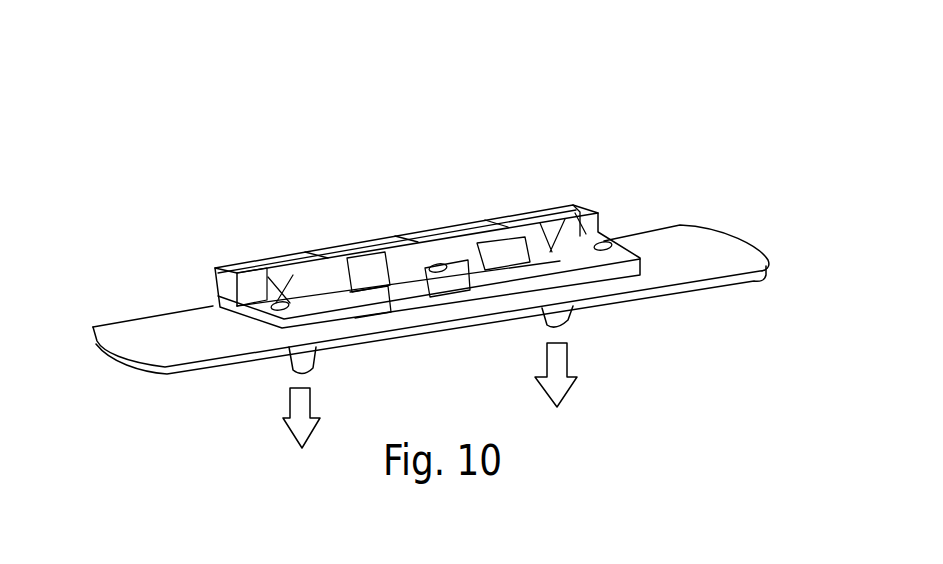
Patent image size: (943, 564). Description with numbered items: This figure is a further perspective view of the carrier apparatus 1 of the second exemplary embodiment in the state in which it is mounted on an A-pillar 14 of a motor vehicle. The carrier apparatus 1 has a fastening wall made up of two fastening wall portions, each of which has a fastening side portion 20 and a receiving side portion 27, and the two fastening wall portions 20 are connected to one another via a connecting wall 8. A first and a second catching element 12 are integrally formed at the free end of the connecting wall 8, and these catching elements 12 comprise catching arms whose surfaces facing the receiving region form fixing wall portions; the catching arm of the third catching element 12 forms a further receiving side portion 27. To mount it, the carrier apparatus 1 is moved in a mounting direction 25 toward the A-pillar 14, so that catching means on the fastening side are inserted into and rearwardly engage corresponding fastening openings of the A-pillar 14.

The carrier apparatus 1 is at (755, 70).
The connecting wall 8 is at (253, 274).
The catching element 12 is at (387, 257).
The A-pillar 14 is at (698, 263).
The fastening side portion 20 is at (300, 327).
The mounting direction 25 is at (285, 443).
The receiving side portion 27 is at (273, 307).